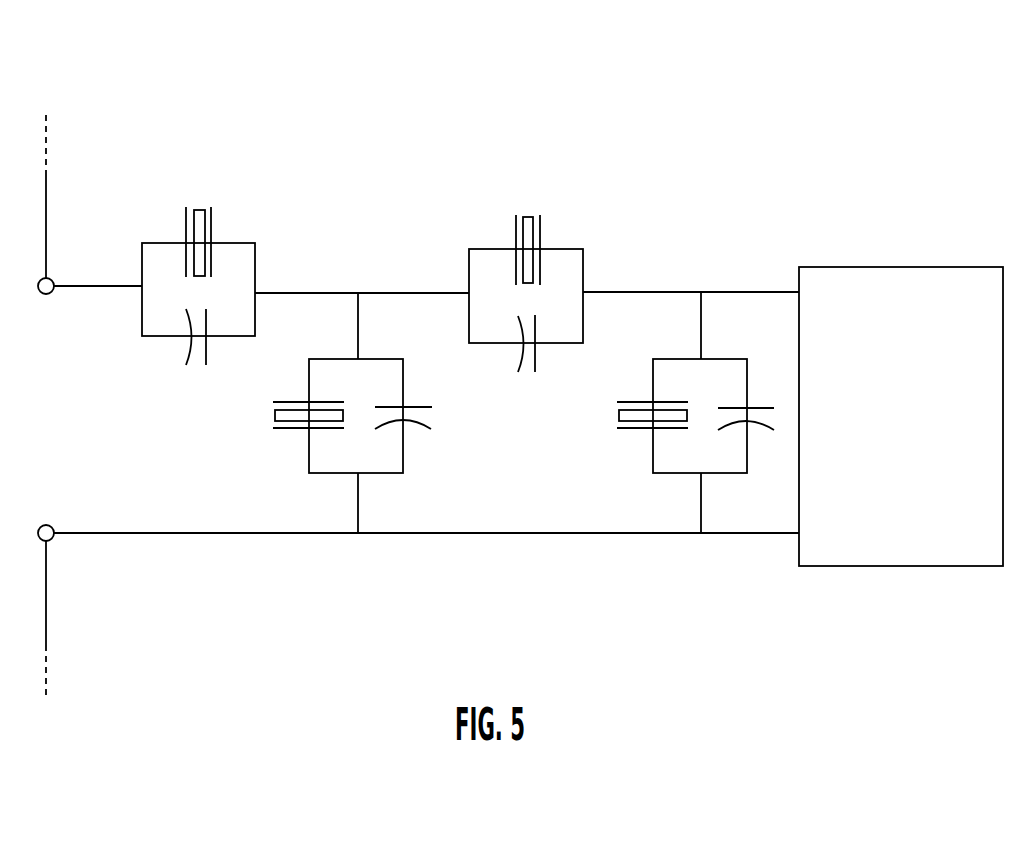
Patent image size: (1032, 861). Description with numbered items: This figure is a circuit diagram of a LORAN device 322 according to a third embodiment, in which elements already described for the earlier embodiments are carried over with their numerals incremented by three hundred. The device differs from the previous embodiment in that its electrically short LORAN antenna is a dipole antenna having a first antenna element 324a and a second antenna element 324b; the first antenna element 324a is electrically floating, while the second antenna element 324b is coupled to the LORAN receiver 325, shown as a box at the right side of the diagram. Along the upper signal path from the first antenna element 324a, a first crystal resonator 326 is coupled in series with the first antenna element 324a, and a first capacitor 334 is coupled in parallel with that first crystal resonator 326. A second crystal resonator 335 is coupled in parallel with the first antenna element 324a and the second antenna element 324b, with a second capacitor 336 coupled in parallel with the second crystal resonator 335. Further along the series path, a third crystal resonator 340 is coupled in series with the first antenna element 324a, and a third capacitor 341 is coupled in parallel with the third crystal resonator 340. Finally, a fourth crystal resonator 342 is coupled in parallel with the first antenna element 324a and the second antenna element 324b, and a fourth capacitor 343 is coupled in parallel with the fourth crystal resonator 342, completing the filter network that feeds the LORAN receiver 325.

The LORAN device 322 is at (637, 70).
The first antenna element 324a is at (46, 172).
The second antenna element 324b is at (46, 633).
The LORAN receiver 325 is at (913, 447).
The first crystal resonator 326 is at (213, 214).
The first capacitor 334 is at (190, 356).
The second crystal resonator 335 is at (273, 420).
The second capacitor 336 is at (420, 418).
The third crystal resonator 340 is at (532, 214).
The third capacitor 341 is at (535, 360).
The fourth crystal resonator 342 is at (626, 428).
The fourth capacitor 343 is at (762, 420).